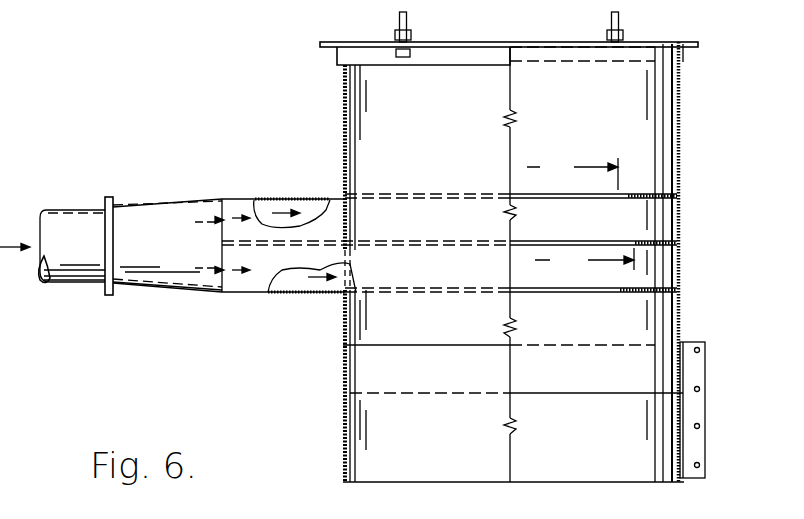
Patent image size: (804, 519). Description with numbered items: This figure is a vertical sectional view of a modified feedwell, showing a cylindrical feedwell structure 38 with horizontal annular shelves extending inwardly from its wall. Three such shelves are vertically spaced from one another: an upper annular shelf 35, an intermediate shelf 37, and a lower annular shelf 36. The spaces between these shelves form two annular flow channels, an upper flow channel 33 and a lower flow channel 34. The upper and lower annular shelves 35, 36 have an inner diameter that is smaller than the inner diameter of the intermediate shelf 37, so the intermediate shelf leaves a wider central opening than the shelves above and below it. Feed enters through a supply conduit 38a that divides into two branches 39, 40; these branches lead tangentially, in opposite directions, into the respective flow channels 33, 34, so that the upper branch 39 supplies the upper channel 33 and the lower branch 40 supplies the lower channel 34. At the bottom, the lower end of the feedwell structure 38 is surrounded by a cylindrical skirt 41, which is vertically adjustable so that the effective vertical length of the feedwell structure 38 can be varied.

The annular flow channel 33 is at (663, 217).
The annular flow channel 34 is at (663, 262).
The upper annular shelf 35 is at (640, 193).
The lower annular shelf 36 is at (638, 291).
The intermediate annular shelf 37 is at (650, 239).
The cylindrical feedwell structure 38 is at (678, 116).
The supply conduit 38a is at (70, 210).
The branch 39 is at (310, 207).
The branch 40 is at (298, 282).
The cylindrical skirt 41 is at (343, 453).